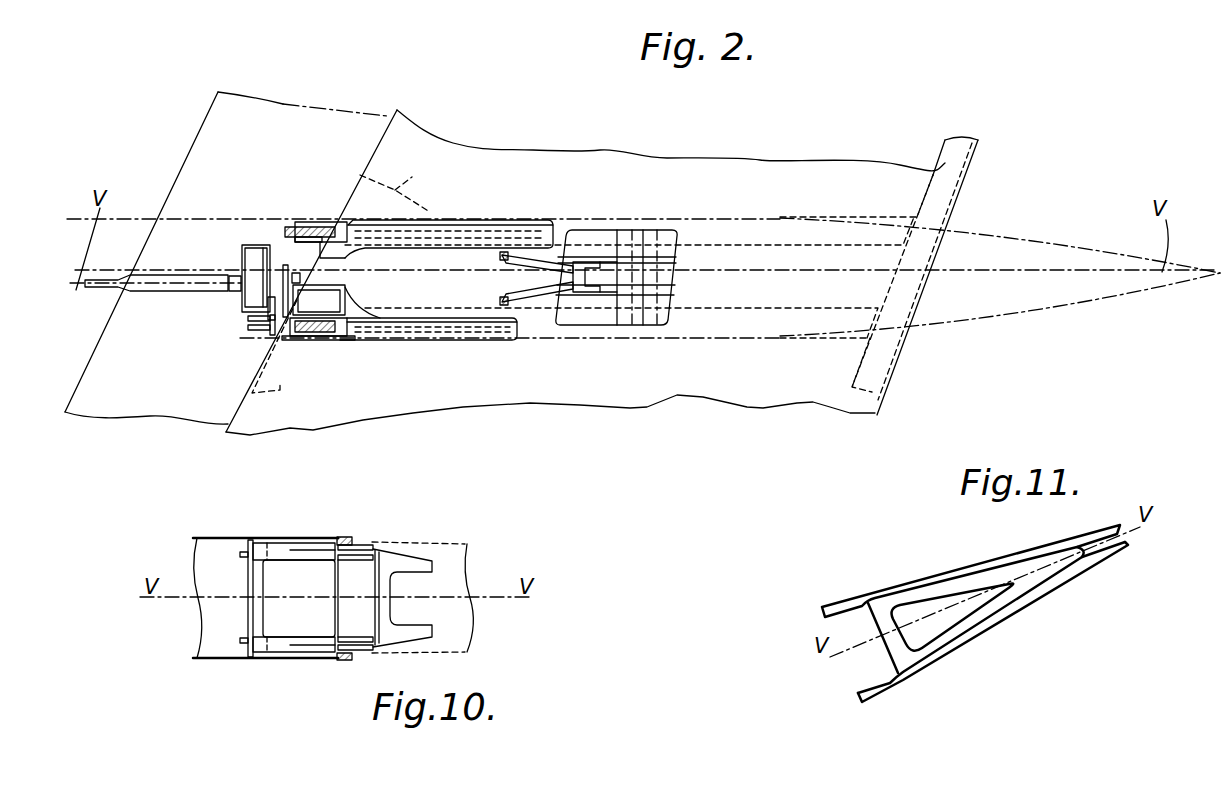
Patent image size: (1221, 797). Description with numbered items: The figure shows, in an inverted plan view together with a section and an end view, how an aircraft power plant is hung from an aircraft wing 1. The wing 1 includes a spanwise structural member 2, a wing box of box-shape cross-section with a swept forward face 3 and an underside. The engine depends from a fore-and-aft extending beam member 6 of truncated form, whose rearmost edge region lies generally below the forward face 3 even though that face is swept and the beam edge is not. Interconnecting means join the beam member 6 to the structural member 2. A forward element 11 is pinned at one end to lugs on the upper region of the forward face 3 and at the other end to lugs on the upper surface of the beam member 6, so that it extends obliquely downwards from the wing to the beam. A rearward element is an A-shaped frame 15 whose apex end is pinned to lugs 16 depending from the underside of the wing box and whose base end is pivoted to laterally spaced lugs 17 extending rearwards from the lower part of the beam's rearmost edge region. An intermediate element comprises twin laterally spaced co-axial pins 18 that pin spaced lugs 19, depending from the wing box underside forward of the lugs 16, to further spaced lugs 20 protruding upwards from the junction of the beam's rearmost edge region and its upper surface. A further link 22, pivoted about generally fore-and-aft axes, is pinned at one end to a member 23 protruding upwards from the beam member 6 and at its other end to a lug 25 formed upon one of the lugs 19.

In FIG. 2, the aircraft wing 1 is at (190, 150).
In FIG. 2, the spanwise structural member 2 is at (460, 408).
In FIG. 2, the forward face 3 is at (370, 183).
In FIG. 2, the beam member 6 is at (170, 340).
In FIG. 2, the forward element 11 is at (183, 275).
In FIG. 2, the A-shaped frame 15 is at (542, 262).
In FIG. 10, the A-shaped frame 15 is at (422, 556).
In FIG. 11, the A-shaped frame 15 is at (1080, 573).
In FIG. 2, the lugs 16 is at (590, 277).
In FIG. 10, the lugs 17 is at (340, 537).
In FIG. 2, the co-axial pins 18 is at (342, 222).
In FIG. 2, the lugs 19 is at (385, 200).
In FIG. 2, the lugs 20 is at (290, 226).
In FIG. 2, the link 22 is at (283, 277).
In FIG. 2, the member 23 is at (246, 243).
In FIG. 10, the member 23 is at (265, 598).
In FIG. 2, the lug 25 is at (275, 338).